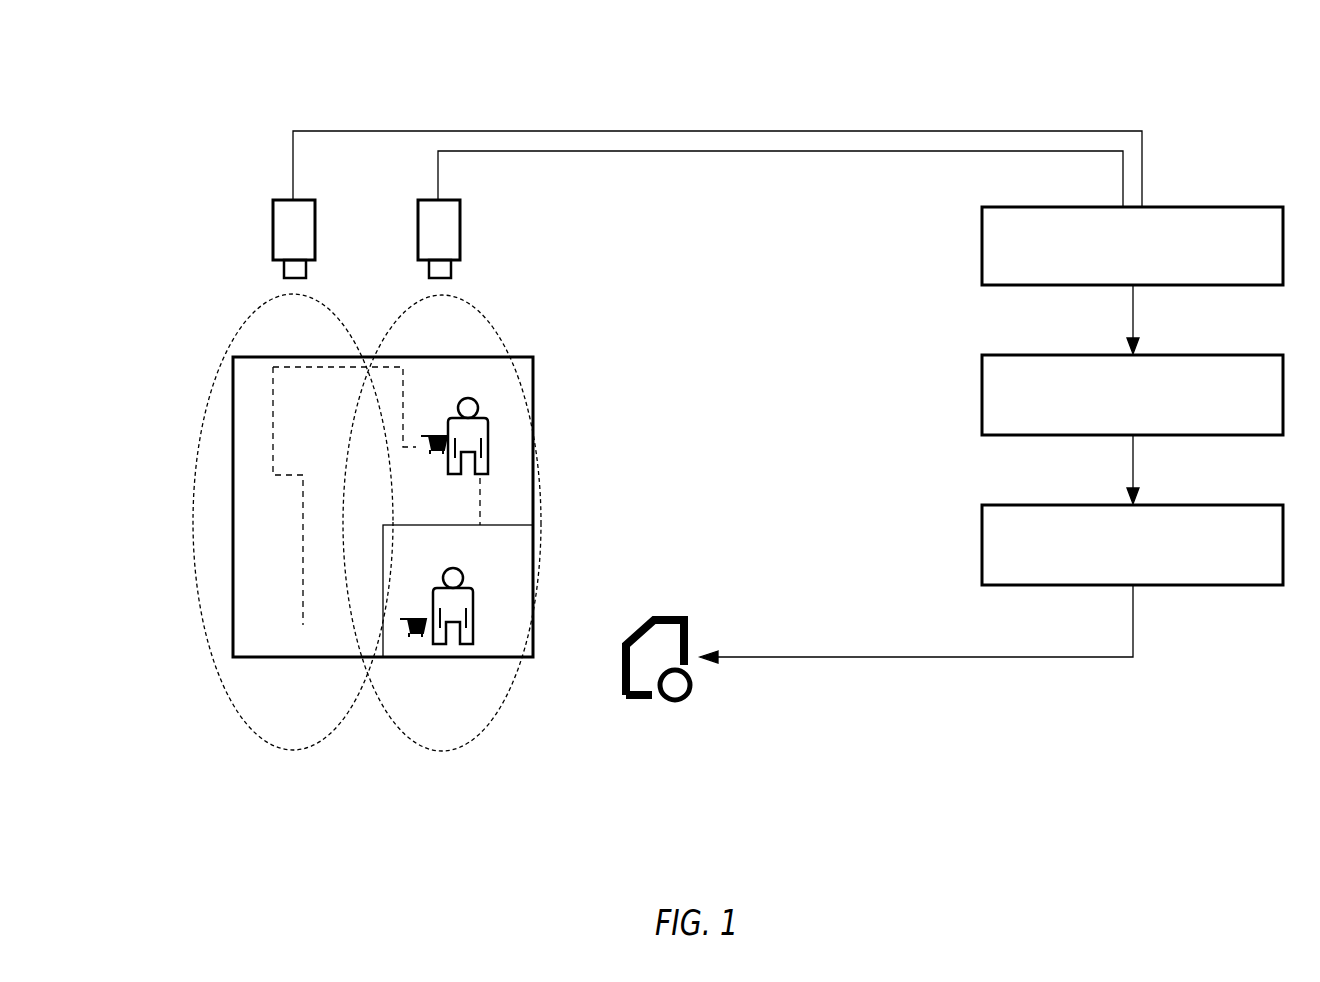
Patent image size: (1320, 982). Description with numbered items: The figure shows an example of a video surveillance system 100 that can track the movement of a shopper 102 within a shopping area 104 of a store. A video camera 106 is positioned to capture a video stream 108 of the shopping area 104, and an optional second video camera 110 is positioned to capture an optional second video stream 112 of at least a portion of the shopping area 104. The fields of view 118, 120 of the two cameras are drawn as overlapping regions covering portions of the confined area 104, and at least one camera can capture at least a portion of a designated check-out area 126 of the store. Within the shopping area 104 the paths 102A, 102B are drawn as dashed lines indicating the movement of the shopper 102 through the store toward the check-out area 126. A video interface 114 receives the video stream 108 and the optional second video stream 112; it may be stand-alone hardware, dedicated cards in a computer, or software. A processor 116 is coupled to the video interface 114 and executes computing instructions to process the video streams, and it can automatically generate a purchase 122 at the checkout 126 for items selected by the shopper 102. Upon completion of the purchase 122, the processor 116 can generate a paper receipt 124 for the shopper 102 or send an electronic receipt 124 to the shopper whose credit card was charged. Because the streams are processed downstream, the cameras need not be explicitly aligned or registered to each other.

The video surveillance system 100 is at (238, 112).
The shopper 102 is at (497, 437).
The first shopper path 102A is at (257, 647).
The second shopper path 102B is at (300, 647).
The shopping area 104 is at (536, 372).
The video camera 106 is at (272, 232).
The video stream 108 is at (680, 130).
The second video camera 110 is at (462, 232).
The second video stream 112 is at (683, 155).
The video interface 114 is at (981, 244).
The processor 116 is at (981, 395).
The field of view 118 is at (195, 572).
The field of view 120 is at (540, 522).
The purchase 122 is at (981, 545).
The receipt 124 is at (660, 705).
The check-out area 126 is at (535, 553).